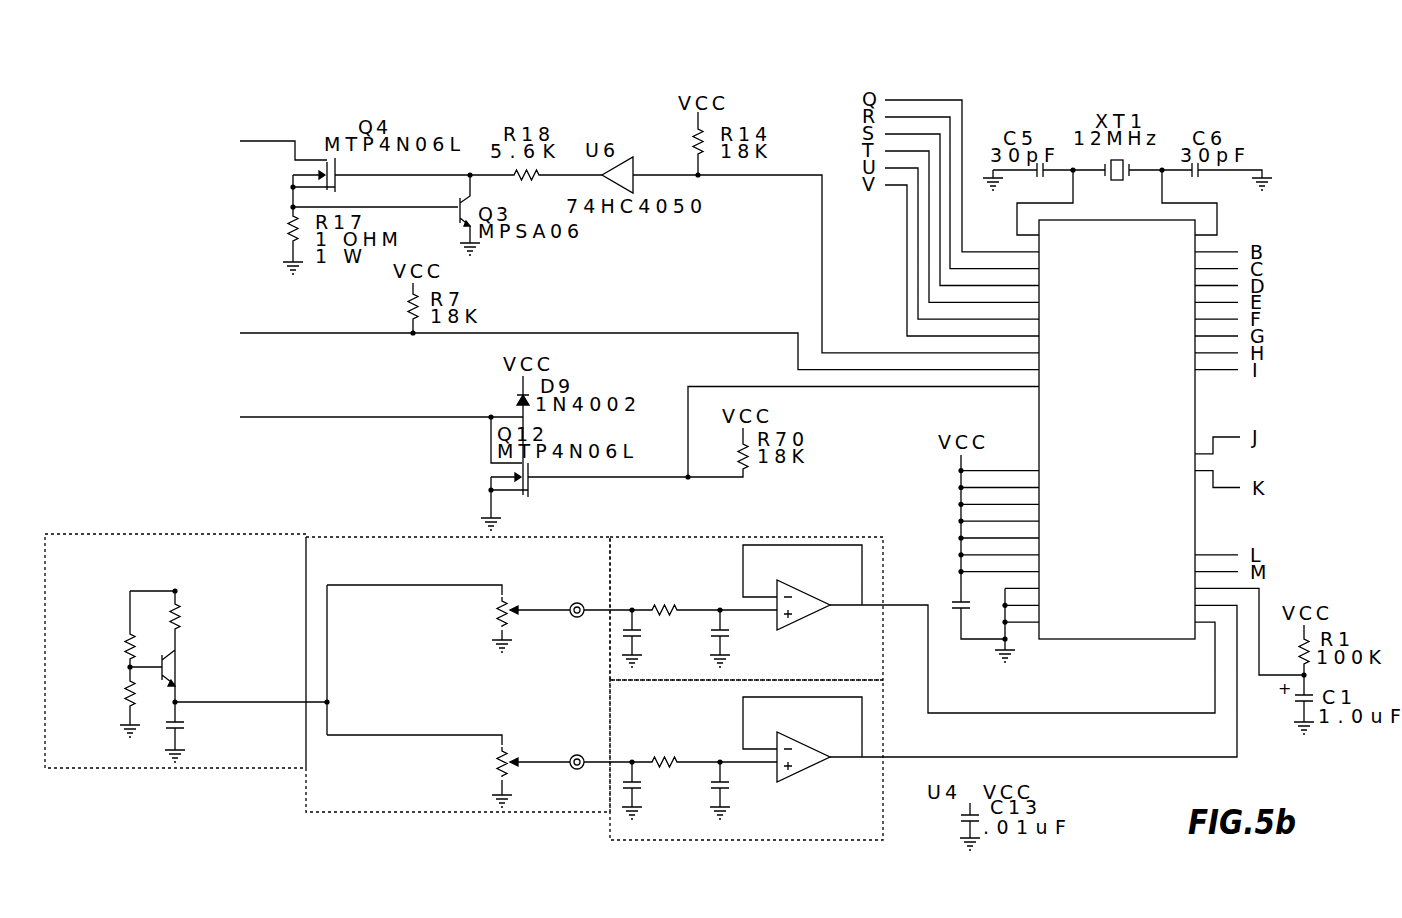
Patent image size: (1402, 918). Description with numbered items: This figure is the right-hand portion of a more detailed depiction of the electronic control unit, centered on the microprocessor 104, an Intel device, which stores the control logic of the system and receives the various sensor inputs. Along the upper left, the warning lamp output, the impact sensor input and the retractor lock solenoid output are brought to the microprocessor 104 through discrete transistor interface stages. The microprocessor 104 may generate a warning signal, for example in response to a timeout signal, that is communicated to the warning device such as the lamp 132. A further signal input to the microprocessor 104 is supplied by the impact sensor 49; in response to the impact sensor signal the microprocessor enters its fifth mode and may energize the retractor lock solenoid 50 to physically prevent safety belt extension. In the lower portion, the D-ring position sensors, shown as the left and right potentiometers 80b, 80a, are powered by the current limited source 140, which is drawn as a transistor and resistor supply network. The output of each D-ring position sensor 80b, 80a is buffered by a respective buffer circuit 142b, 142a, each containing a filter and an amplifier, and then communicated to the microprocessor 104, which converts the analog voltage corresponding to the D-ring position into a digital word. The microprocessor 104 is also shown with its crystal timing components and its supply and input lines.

The warning device 132 is at (212, 91).
The impact sensor 49 is at (207, 272).
The retractor lock solenoid 50 is at (232, 421).
The current limited source 140 is at (143, 757).
The D-ring position sensor 80b is at (517, 625).
The D-ring position sensor 80a is at (512, 785).
The buffer circuit 142b is at (697, 553).
The buffer circuit 142a is at (828, 822).
The microprocessor 104 is at (1130, 615).